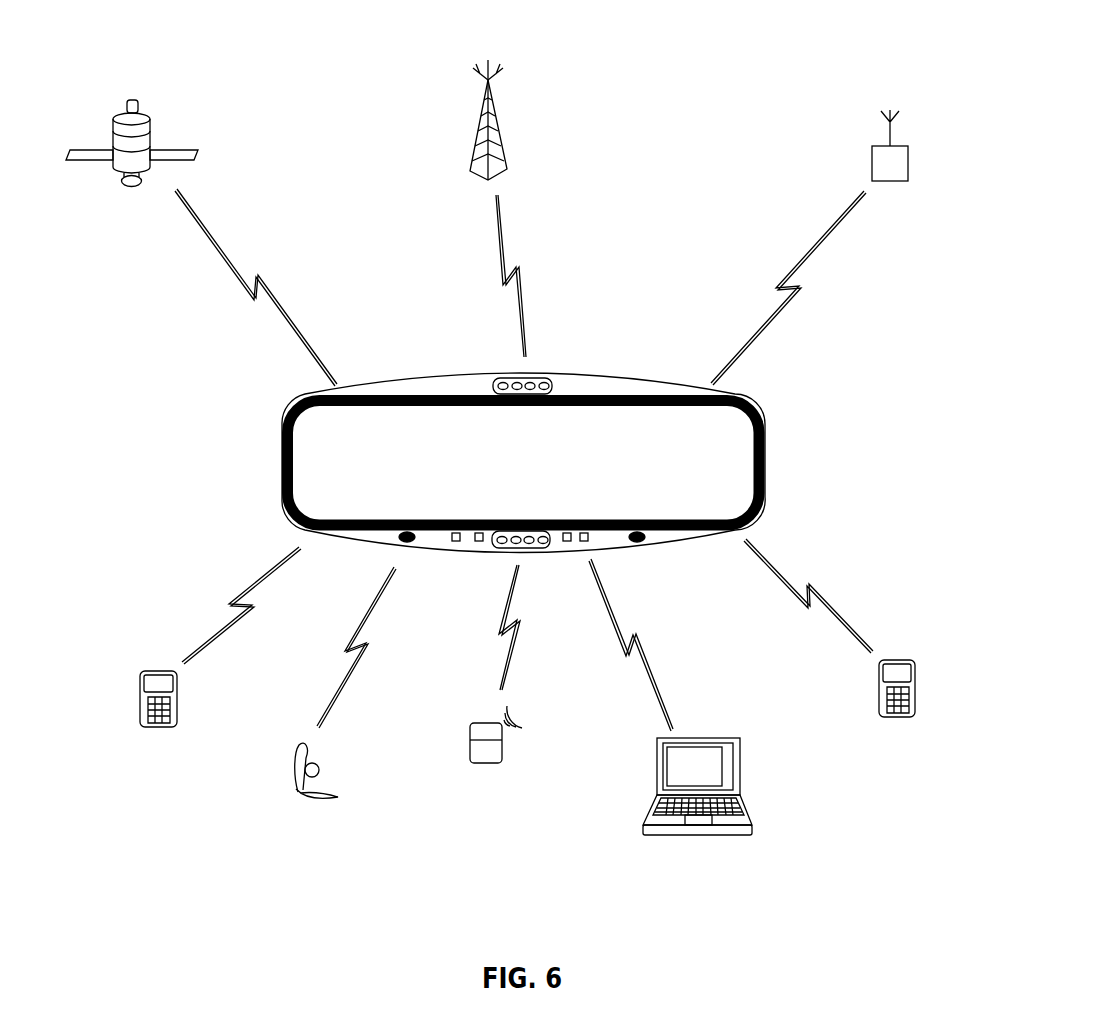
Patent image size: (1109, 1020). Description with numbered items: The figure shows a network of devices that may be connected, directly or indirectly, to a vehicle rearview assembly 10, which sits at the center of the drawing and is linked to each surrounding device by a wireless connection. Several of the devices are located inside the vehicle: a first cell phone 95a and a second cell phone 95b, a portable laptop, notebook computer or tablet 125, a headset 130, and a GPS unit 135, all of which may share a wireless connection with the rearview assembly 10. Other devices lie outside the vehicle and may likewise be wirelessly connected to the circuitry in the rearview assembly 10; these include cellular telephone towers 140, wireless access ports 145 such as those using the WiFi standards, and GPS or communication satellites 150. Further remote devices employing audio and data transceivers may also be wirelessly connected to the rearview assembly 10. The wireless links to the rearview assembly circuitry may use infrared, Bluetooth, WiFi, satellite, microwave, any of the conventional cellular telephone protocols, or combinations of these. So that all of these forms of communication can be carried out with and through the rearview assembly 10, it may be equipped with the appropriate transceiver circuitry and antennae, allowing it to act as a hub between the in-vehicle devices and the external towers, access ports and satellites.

The rearview assembly 10 is at (636, 347).
The GPS or communication satellites 150 is at (118, 118).
The cellular telephone towers 140 is at (482, 115).
The wireless access ports 145 is at (900, 146).
The second cell phone 95b is at (142, 680).
The headset 130 is at (297, 752).
The GPS unit 135 is at (478, 724).
The portable laptop, notebook computer or tablet 125 is at (720, 738).
The first cell phone 95a is at (896, 660).